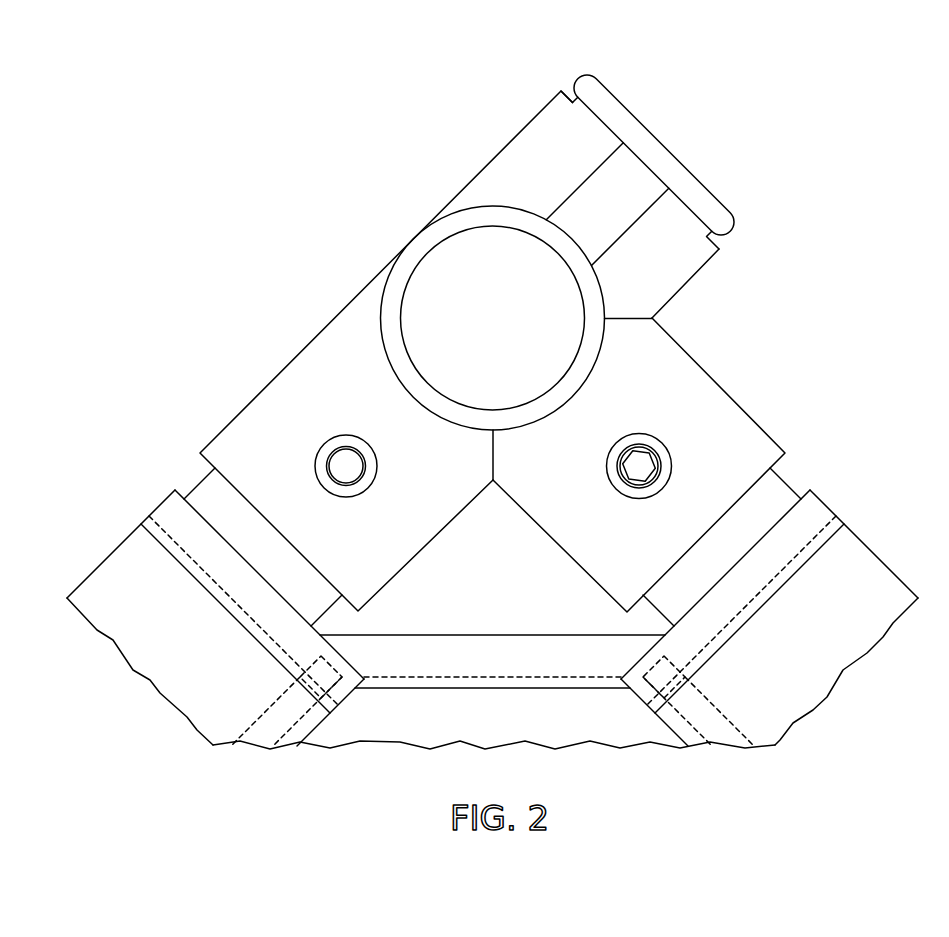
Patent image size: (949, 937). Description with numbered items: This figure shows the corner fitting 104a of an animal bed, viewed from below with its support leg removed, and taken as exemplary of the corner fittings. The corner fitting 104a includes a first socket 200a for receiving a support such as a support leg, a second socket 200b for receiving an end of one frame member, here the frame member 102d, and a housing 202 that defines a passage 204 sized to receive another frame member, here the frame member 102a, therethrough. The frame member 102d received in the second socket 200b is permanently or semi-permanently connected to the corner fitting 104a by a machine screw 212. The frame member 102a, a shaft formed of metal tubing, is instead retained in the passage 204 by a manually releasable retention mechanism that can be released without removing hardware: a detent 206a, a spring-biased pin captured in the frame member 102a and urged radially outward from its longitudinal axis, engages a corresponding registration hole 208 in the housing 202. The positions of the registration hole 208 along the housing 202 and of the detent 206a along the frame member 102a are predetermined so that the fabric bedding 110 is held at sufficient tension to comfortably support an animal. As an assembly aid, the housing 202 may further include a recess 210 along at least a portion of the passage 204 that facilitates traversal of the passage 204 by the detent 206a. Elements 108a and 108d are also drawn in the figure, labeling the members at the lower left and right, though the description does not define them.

The corner fitting 104a is at (474, 350).
The housing 202 is at (533, 141).
The first socket 200a is at (505, 207).
The second socket 200b is at (758, 432).
The passage 204 is at (536, 62).
The frame member 102a is at (680, 138).
The frame member 102d is at (776, 490).
The recess 210 is at (633, 184).
The detent 206a is at (345, 456).
The registration hole 208 is at (349, 513).
The machine screw 212 is at (642, 494).
The frame member 108a is at (130, 568).
The frame member 108d is at (856, 572).
The fabric bedding 110 is at (511, 728).